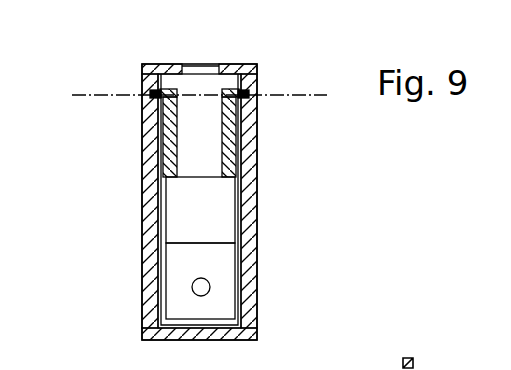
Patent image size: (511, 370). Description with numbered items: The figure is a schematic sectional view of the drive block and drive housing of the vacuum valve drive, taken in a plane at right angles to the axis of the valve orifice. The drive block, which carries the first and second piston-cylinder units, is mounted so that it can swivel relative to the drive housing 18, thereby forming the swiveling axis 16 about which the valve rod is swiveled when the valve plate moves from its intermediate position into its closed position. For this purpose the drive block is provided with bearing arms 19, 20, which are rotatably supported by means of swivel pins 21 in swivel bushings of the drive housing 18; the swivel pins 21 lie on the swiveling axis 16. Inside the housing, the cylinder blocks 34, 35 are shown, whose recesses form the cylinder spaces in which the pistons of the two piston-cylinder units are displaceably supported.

The swiveling axis 16 is at (120, 95).
The drive housing 18 is at (250, 178).
The bearing arm 19 is at (162, 128).
The bearing arm 20 is at (232, 137).
The swivel pin 21 is at (152, 97).
The cylinder block 34 is at (222, 260).
The cylinder block 35 is at (222, 213).